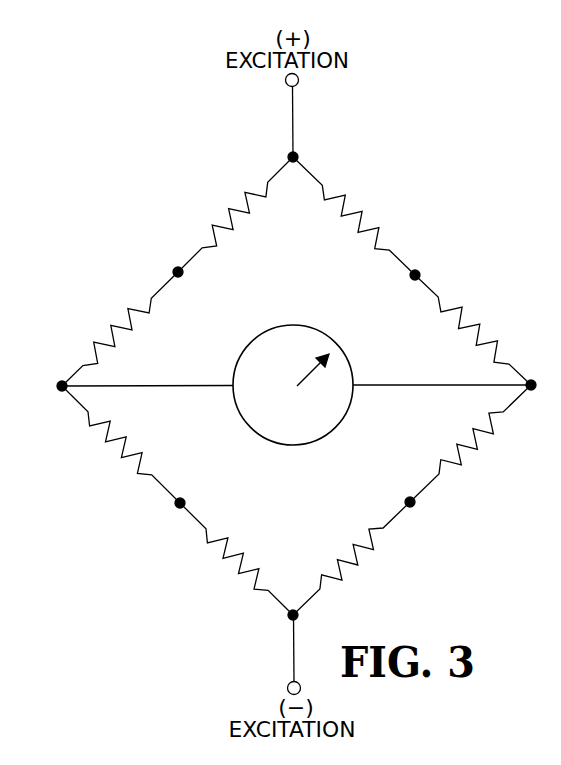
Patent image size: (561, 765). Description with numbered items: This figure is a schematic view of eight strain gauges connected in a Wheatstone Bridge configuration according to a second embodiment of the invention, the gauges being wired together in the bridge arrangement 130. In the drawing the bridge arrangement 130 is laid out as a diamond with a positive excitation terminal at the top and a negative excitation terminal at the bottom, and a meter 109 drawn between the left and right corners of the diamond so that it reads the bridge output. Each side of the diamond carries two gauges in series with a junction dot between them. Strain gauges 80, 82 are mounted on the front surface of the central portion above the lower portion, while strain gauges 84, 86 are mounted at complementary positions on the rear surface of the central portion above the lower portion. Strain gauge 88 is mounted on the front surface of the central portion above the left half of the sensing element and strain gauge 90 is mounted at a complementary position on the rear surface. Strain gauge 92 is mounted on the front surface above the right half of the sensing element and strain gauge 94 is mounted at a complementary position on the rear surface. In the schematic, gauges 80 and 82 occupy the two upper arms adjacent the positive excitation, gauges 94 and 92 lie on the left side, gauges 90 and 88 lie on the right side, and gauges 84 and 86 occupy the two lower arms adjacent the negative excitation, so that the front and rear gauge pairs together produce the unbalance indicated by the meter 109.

The strain gauge 80 is at (218, 223).
The strain gauge 82 is at (363, 217).
The strain gauge 84 is at (227, 565).
The strain gauge 86 is at (373, 567).
The strain gauge 88 is at (475, 452).
The strain gauge 90 is at (468, 313).
The strain gauge 92 is at (108, 445).
The strain gauge 94 is at (102, 332).
The meter / indicator 109 is at (354, 372).
The bridge arrangement 130 is at (432, 249).